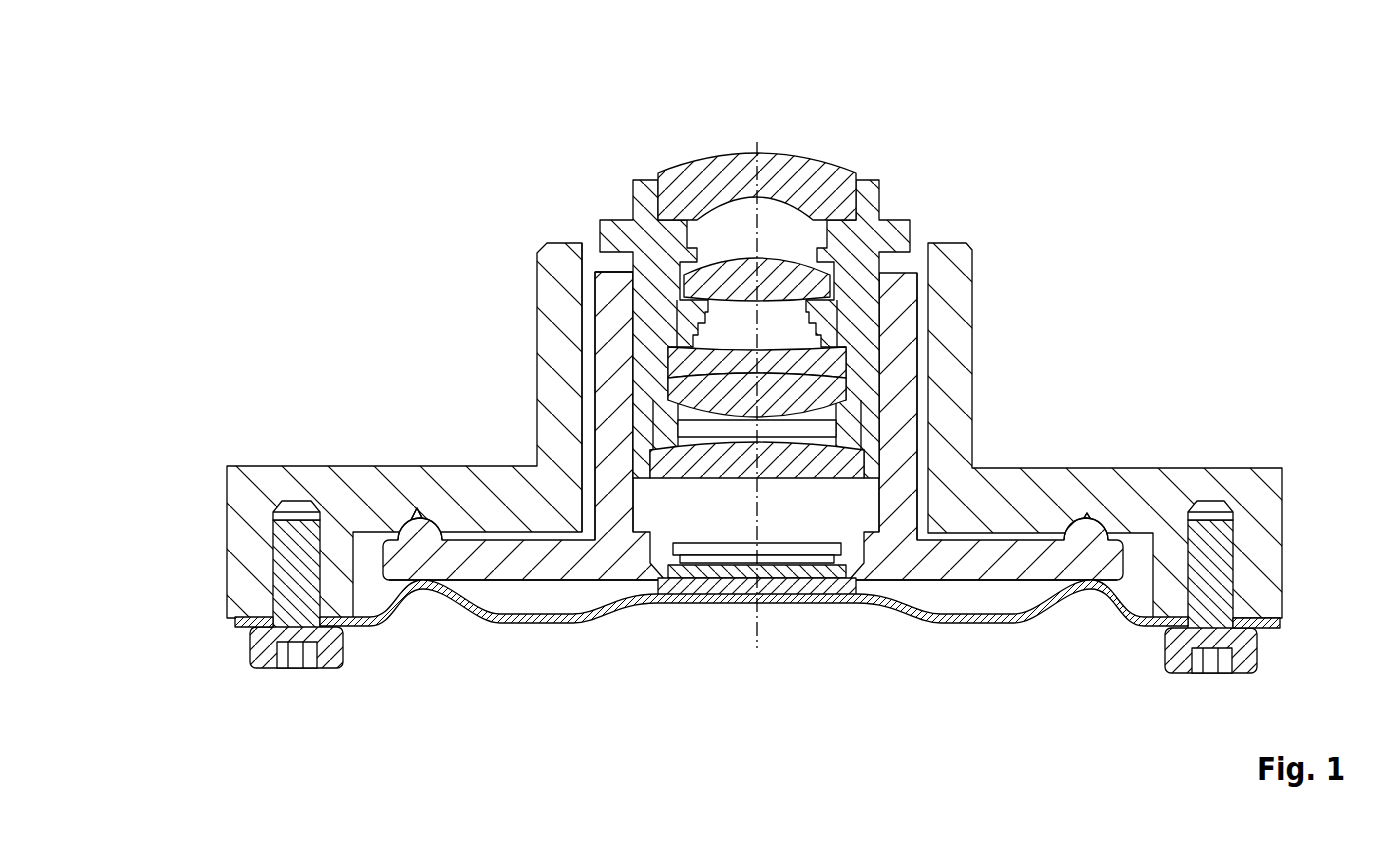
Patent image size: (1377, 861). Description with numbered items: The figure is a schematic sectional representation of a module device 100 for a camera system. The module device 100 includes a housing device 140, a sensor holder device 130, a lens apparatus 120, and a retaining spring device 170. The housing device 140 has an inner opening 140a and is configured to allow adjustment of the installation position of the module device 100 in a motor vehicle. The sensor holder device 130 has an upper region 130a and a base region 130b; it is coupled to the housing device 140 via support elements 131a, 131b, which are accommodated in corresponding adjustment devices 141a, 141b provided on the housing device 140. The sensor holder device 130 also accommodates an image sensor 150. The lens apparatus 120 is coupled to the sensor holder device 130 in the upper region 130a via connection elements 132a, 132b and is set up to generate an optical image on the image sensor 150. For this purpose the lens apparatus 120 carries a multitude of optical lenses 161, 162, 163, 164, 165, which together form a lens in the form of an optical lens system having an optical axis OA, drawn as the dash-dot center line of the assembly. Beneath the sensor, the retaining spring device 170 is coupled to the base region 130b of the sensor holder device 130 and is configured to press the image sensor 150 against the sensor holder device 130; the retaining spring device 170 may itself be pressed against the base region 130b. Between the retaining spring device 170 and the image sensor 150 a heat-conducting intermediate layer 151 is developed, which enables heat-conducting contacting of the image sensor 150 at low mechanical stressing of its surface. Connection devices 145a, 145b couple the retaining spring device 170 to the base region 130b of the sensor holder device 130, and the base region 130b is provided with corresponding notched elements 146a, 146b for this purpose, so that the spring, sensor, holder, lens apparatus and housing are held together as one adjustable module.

The module device 100 is at (754, 384).
The lens apparatus 120 is at (897, 235).
The sensor holder device 130 is at (770, 469).
The upper region 130a is at (722, 277).
The base region 130b is at (545, 565).
The support element 131a is at (427, 532).
The support element 131b is at (1088, 535).
The connection element 132a is at (615, 395).
The connection element 132b is at (878, 347).
The housing device 140 is at (754, 430).
The inner opening 140a is at (920, 290).
The adjustment device 141a is at (415, 508).
The adjustment device 141b is at (1086, 514).
The connection device 145a is at (327, 653).
The connection device 145b is at (1240, 658).
The notched element 146a is at (300, 570).
The notched element 146b is at (1216, 571).
The image sensor 150 is at (757, 611).
The heat-conducting intermediate layer 151 is at (685, 588).
The optical lens 161 is at (792, 163).
The optical lens 162 is at (695, 291).
The optical lens 163 is at (700, 365).
The optical lens 164 is at (697, 393).
The optical lens 165 is at (792, 463).
The retaining spring device 170 is at (893, 612).
The optical axis OA is at (755, 648).